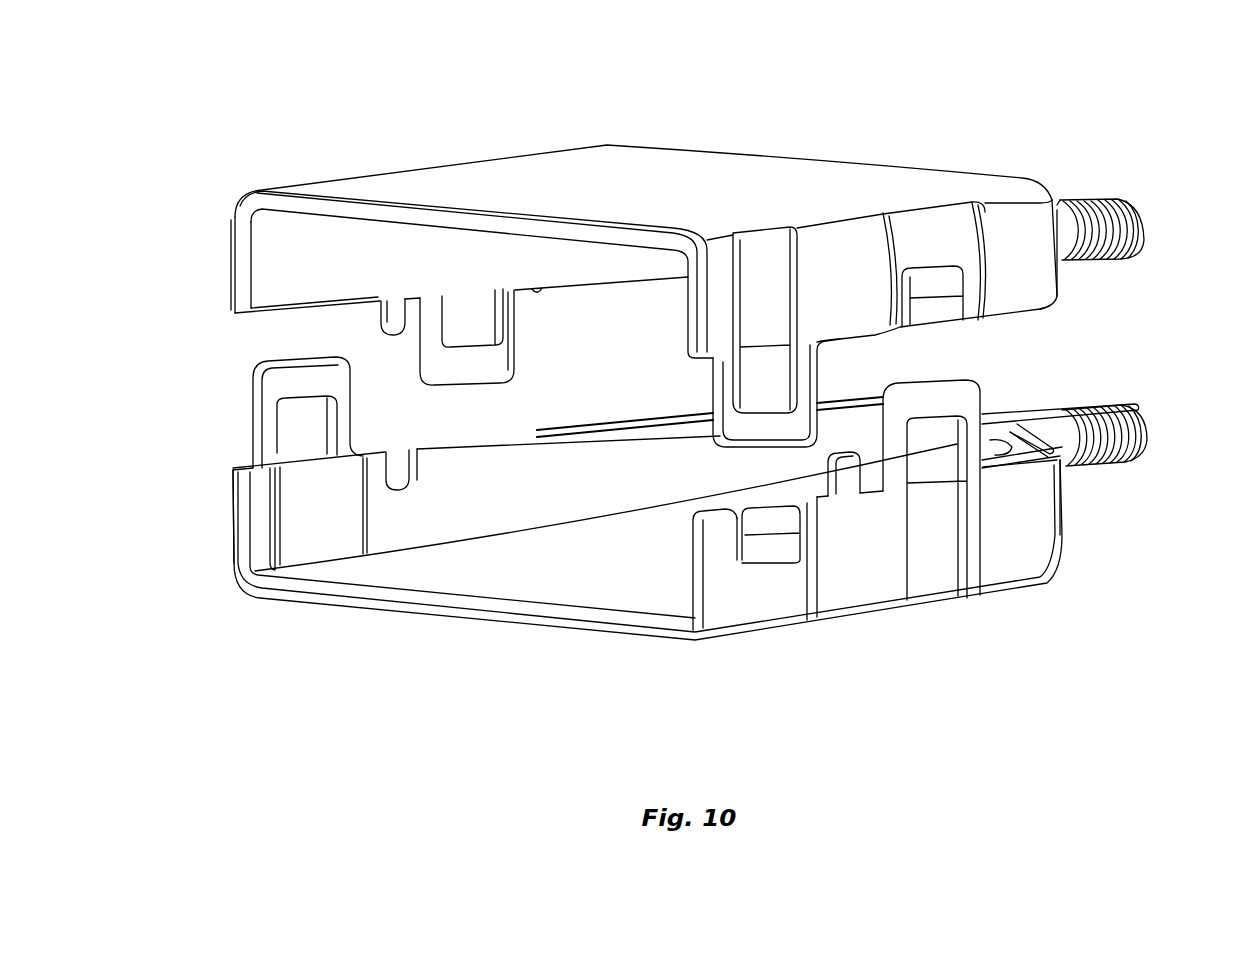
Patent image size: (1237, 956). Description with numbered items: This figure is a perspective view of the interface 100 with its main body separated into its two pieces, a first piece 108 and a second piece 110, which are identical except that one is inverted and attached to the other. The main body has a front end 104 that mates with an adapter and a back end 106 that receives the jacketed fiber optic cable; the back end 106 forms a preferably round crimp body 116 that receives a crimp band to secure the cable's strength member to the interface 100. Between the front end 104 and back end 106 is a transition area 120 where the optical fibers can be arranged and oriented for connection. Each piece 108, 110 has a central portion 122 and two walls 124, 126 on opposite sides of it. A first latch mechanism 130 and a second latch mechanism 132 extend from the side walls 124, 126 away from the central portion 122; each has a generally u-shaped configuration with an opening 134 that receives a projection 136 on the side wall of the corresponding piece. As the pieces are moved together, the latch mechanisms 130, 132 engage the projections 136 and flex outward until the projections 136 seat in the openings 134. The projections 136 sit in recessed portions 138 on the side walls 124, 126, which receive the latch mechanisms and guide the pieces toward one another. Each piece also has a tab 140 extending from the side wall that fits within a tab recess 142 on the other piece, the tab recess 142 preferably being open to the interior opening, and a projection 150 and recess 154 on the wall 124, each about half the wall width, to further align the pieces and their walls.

The interface 100 is at (1133, 123).
The front end 104 is at (548, 636).
The back end 106 is at (1150, 200).
The first piece 108 is at (1017, 592).
The second piece 110 is at (618, 143).
The crimp body 116 is at (1147, 226).
The transition area 120 is at (1010, 177).
The central portion 122 is at (715, 188).
The wall 124 is at (847, 283).
The wall 126 is at (326, 268).
The first latch mechanism 130 is at (818, 378).
The second latch mechanism 132 is at (517, 320).
The opening 134 is at (456, 334).
The projection 136 is at (937, 290).
The recessed portion 138 is at (927, 237).
The tab 140 is at (396, 316).
The tab recess 142 is at (420, 480).
The projection 150 is at (647, 281).
The recess 154 is at (607, 434).